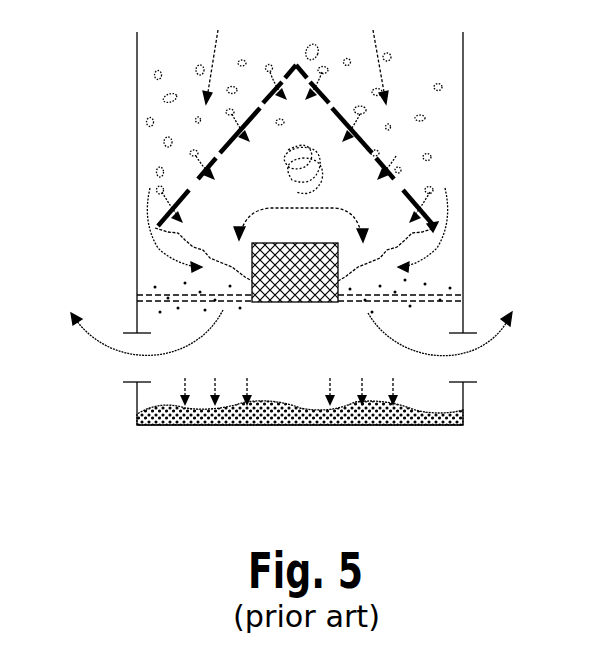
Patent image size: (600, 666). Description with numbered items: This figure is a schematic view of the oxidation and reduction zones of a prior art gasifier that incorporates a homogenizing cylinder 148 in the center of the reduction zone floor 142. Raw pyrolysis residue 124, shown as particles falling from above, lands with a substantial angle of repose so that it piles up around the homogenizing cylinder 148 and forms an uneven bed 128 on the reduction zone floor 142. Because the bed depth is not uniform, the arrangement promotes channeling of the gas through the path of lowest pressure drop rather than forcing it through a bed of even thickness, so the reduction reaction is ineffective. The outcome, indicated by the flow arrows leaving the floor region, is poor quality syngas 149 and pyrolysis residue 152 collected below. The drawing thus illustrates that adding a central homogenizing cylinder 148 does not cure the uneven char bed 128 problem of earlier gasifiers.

The pyrolysis residue/char 124 is at (165, 98).
The char bed 128 is at (140, 247).
The reduction zone floor 142 is at (448, 316).
The homogenizing cylinder 148 is at (292, 303).
The syngas 149 is at (548, 344).
The pyrolysis residue 152 is at (278, 378).